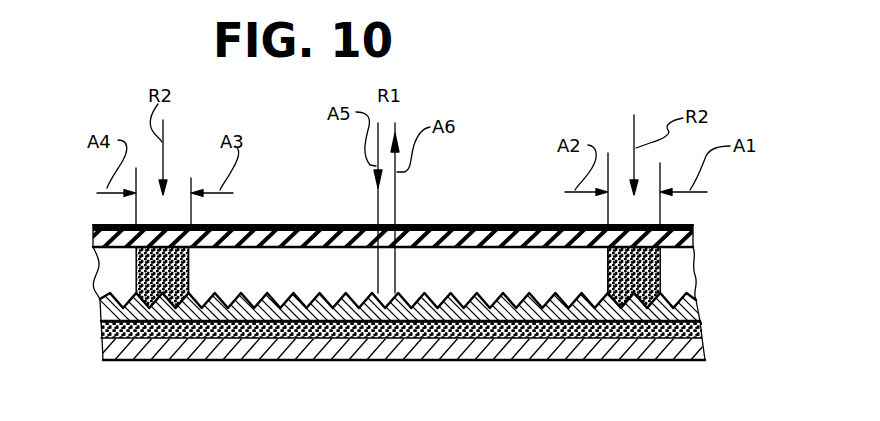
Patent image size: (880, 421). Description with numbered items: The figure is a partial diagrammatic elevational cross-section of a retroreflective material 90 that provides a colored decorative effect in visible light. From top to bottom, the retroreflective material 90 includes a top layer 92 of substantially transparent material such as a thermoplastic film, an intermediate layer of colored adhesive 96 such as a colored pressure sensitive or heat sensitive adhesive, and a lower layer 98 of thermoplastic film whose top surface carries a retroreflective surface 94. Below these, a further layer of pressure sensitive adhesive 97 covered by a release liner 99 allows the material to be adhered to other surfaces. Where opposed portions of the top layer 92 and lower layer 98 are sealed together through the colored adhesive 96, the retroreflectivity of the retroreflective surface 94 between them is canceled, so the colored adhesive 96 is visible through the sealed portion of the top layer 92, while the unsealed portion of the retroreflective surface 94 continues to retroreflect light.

The retroreflective material 90 is at (512, 152).
The top layer 92 is at (690, 233).
The retroreflective surface 94 is at (283, 292).
The colored adhesive 96 is at (135, 276).
The pressure sensitive adhesive 97 is at (702, 328).
The lower layer 98 is at (442, 252).
The release liner 99 is at (703, 350).